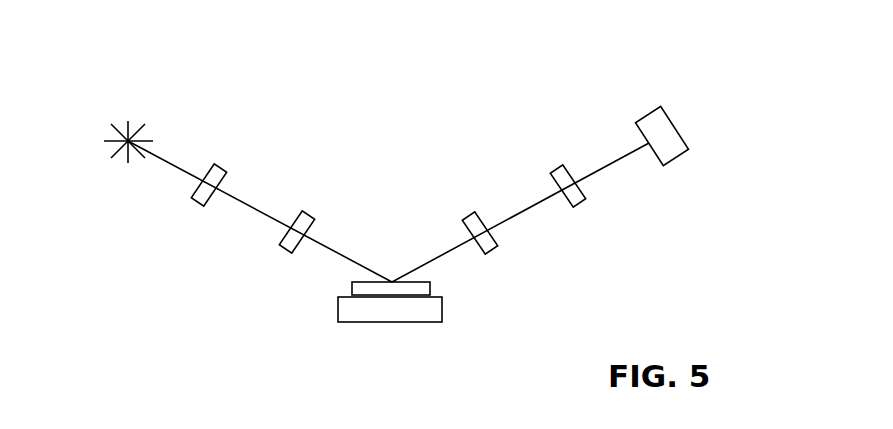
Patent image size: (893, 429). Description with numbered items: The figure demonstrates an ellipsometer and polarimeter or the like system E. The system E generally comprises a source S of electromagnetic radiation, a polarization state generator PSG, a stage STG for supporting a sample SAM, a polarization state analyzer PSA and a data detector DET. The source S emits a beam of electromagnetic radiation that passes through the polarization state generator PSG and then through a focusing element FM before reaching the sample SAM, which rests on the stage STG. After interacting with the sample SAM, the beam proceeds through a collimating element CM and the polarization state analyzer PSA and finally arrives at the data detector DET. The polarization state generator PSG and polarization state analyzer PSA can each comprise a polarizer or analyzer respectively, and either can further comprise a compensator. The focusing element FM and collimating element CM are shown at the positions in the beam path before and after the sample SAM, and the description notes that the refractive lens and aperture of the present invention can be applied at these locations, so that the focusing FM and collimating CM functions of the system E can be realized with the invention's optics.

The ellipsometer and polarimeter system E is at (388, 152).
The source of electromagnetic radiation S is at (144, 117).
The polarization state generator PSG is at (262, 164).
The focusing element FM is at (351, 213).
The collimating element CM is at (502, 245).
The polarization state analyzer PSA is at (534, 163).
The data detector DET is at (705, 127).
The sample SAM is at (453, 291).
The stage STG is at (417, 318).